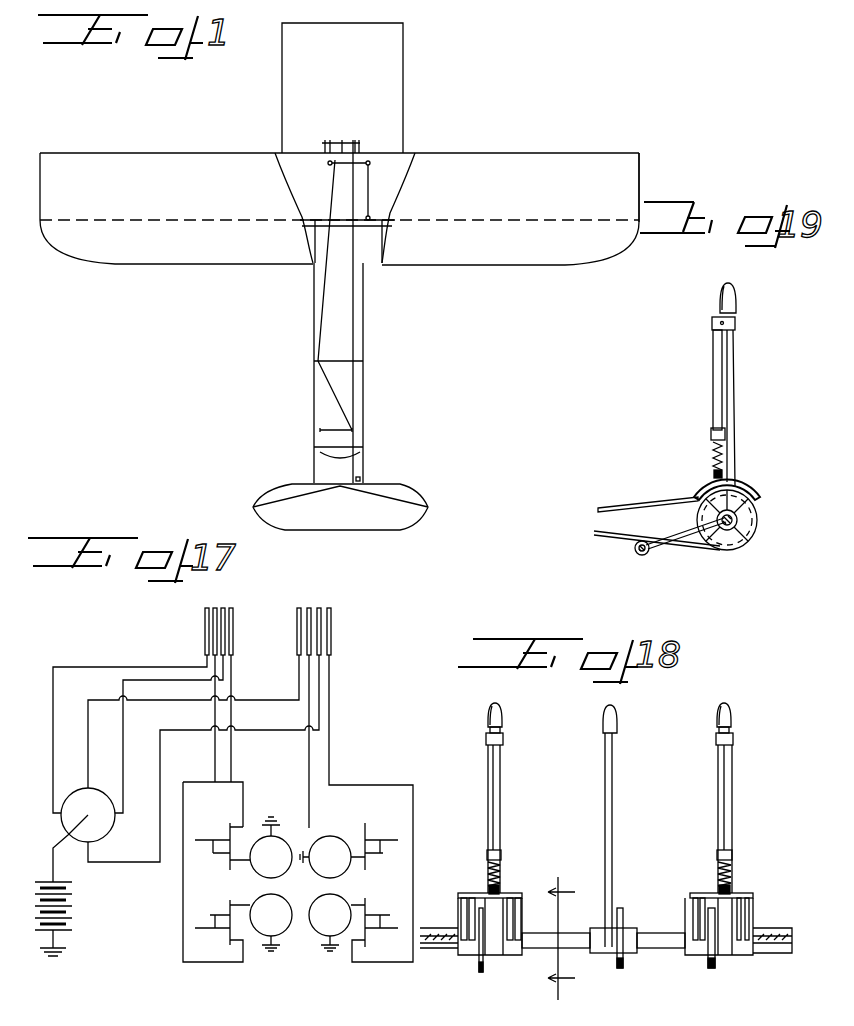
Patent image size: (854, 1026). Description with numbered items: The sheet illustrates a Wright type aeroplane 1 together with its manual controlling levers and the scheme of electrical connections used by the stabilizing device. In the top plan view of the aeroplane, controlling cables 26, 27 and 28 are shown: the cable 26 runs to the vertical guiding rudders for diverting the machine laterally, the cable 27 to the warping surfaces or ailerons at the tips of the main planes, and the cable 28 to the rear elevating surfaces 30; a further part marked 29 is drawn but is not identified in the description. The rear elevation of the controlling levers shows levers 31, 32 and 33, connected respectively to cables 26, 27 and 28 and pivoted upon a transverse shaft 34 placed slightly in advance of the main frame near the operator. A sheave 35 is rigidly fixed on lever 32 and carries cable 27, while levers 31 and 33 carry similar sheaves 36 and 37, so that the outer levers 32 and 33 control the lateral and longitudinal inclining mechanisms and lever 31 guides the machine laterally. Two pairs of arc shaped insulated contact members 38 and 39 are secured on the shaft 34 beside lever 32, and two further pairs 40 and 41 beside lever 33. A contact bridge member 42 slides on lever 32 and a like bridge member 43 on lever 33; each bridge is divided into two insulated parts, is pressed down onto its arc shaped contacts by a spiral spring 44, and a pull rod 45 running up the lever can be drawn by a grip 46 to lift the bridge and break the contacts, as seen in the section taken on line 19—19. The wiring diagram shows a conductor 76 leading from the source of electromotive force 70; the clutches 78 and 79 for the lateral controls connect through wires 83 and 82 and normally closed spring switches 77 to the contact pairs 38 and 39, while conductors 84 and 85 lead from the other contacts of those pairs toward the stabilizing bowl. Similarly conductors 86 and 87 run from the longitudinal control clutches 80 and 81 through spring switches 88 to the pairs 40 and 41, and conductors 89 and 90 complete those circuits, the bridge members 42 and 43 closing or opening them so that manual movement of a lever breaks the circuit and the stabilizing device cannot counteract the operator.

In FIG. 1, the Wright machine 1 is at (195, 238).
In FIG. 19, the Wright machine 1 is at (638, 553).
In FIG. 1, the controlling cable 26 is at (325, 312).
In FIG. 1, the controlling cable 27 is at (497, 225).
In FIG. 19, the controlling cable 27 is at (641, 495).
In FIG. 1, the controlling cable 28 is at (352, 382).
In FIG. 1, the hinge arc 29 is at (346, 456).
In FIG. 1, the rear elevating surfaces 30 is at (340, 518).
In FIG. 18, the terminal 19 is at (572, 938).
In FIG. 18, the lever 31 is at (613, 882).
In FIG. 19, the lever 32 is at (732, 412).
In FIG. 18, the lever 32 is at (490, 776).
In FIG. 18, the lever 33 is at (730, 808).
In FIG. 19, the transverse shaft 34 is at (737, 526).
In FIG. 18, the transverse shaft 34 is at (668, 942).
In FIG. 19, the sheave 35 is at (708, 549).
In FIG. 18, the sheave 35 is at (482, 966).
In FIG. 18, the sheave 36 is at (620, 962).
In FIG. 18, the sheave 37 is at (712, 962).
In FIG. 17, the arc shaped insulated contact members 38 is at (213, 632).
In FIG. 18, the arc shaped insulated contact members 38 is at (462, 908).
In FIG. 19, the arc shaped insulated contact members 39 is at (758, 505).
In FIG. 17, the arc shaped insulated contact members 39 is at (229, 626).
In FIG. 18, the arc shaped insulated contact members 39 is at (514, 902).
In FIG. 17, the arc shaped contact members 40 is at (297, 643).
In FIG. 18, the arc shaped contact members 40 is at (700, 905).
In FIG. 17, the arc shaped contact members 41 is at (337, 628).
In FIG. 18, the arc shaped contact members 41 is at (746, 905).
In FIG. 19, the contact bridge member 42 is at (736, 478).
In FIG. 18, the contact bridge member 42 is at (470, 893).
In FIG. 18, the contact bridge member 43 is at (700, 893).
In FIG. 19, the spiral springs 44 is at (711, 443).
In FIG. 18, the spiral springs 44 is at (731, 873).
In FIG. 19, the pull rod 45 is at (716, 397).
In FIG. 18, the pull rod 45 is at (728, 828).
In FIG. 19, the grip 46 is at (718, 300).
In FIG. 18, the grip 46 is at (718, 719).
In FIG. 17, the source of E. M. F. 70 is at (70, 928).
In FIG. 17, the conductor 76 is at (55, 865).
In FIG. 17, the spring switches 77 is at (208, 846).
In FIG. 17, the clutch 78 is at (272, 864).
In FIG. 17, the clutch 79 is at (282, 920).
In FIG. 17, the clutch 80 is at (331, 850).
In FIG. 17, the clutch 81 is at (328, 925).
In FIG. 17, the wire 82 is at (183, 918).
In FIG. 17, the wire 83 is at (224, 775).
In FIG. 17, the conductor 84 is at (72, 667).
In FIG. 17, the conductor 85 is at (140, 772).
In FIG. 17, the conductor 86 is at (418, 782).
In FIG. 17, the conductor 87 is at (310, 780).
In FIG. 17, the spring switches 88 is at (392, 846).
In FIG. 17, the conductor 89 is at (287, 732).
In FIG. 17, the conductor 90 is at (258, 705).